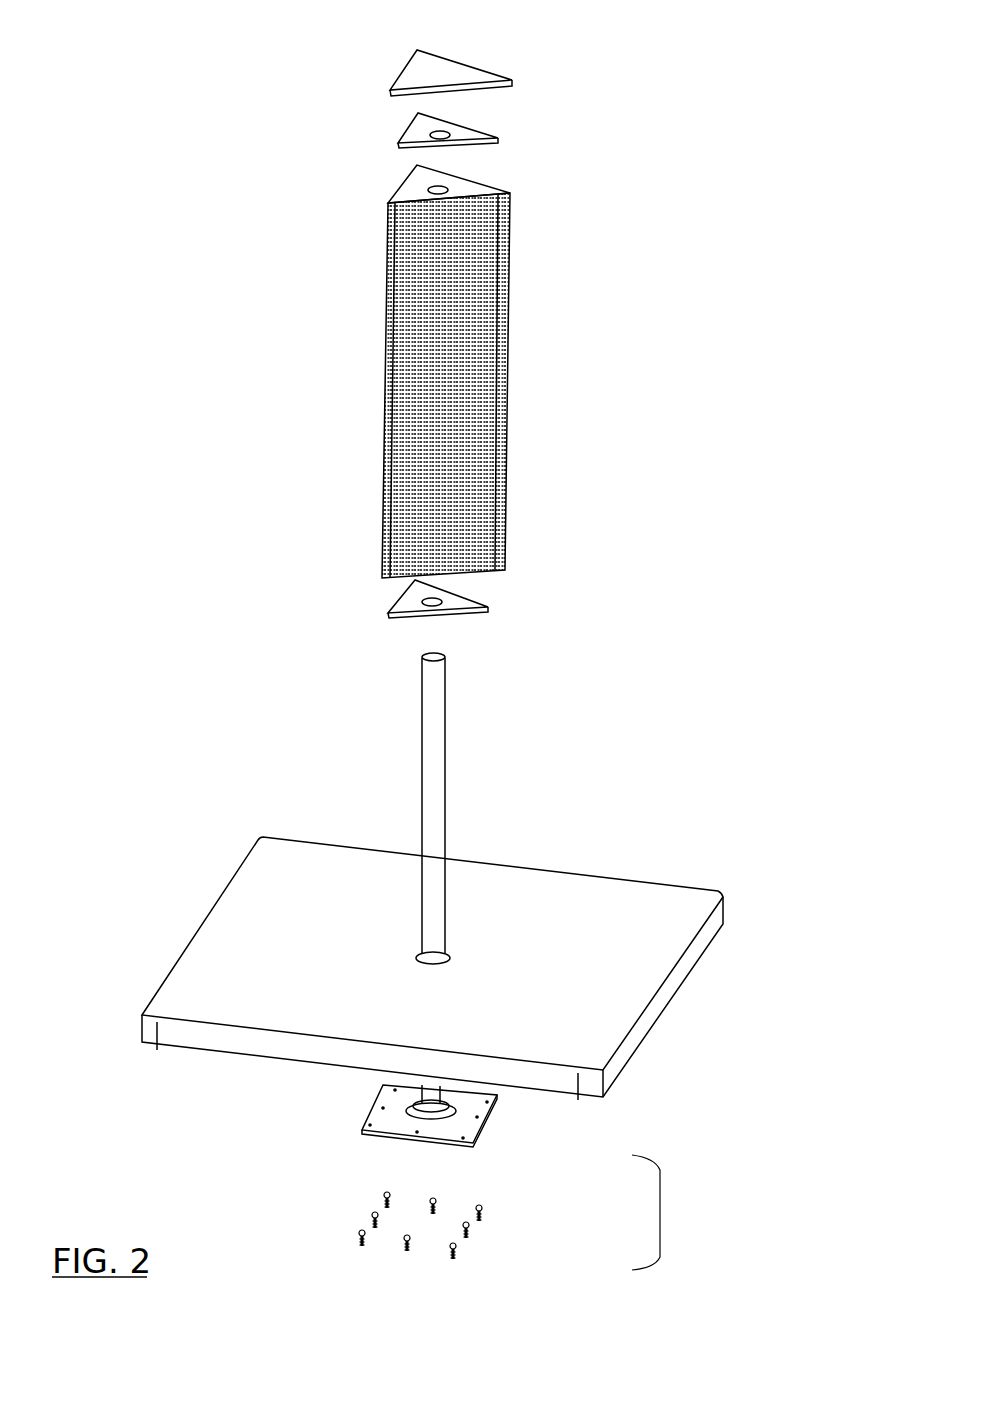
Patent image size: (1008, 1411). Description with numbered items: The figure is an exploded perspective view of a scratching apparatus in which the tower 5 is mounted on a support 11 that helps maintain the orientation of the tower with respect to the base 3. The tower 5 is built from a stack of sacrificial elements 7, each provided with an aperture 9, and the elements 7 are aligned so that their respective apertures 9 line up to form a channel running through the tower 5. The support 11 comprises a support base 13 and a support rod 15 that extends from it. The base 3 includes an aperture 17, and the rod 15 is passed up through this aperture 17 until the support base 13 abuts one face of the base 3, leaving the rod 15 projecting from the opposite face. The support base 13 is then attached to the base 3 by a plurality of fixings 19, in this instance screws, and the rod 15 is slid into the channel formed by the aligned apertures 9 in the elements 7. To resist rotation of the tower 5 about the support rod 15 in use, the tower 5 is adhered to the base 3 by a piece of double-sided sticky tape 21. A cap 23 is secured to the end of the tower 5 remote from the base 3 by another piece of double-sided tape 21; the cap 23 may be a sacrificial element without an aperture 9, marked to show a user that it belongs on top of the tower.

The base 3 is at (458, 941).
The tower 5 is at (461, 334).
The sacrificial element 7 is at (388, 205).
The aperture 9 is at (443, 187).
The support 11 is at (660, 1212).
The support base 13 is at (477, 1120).
The support rod 15 is at (432, 863).
The aperture 17 is at (412, 953).
The fixings 19 is at (335, 1202).
The double-sided sticky tape 21 is at (413, 140).
The cap 23 is at (457, 73).